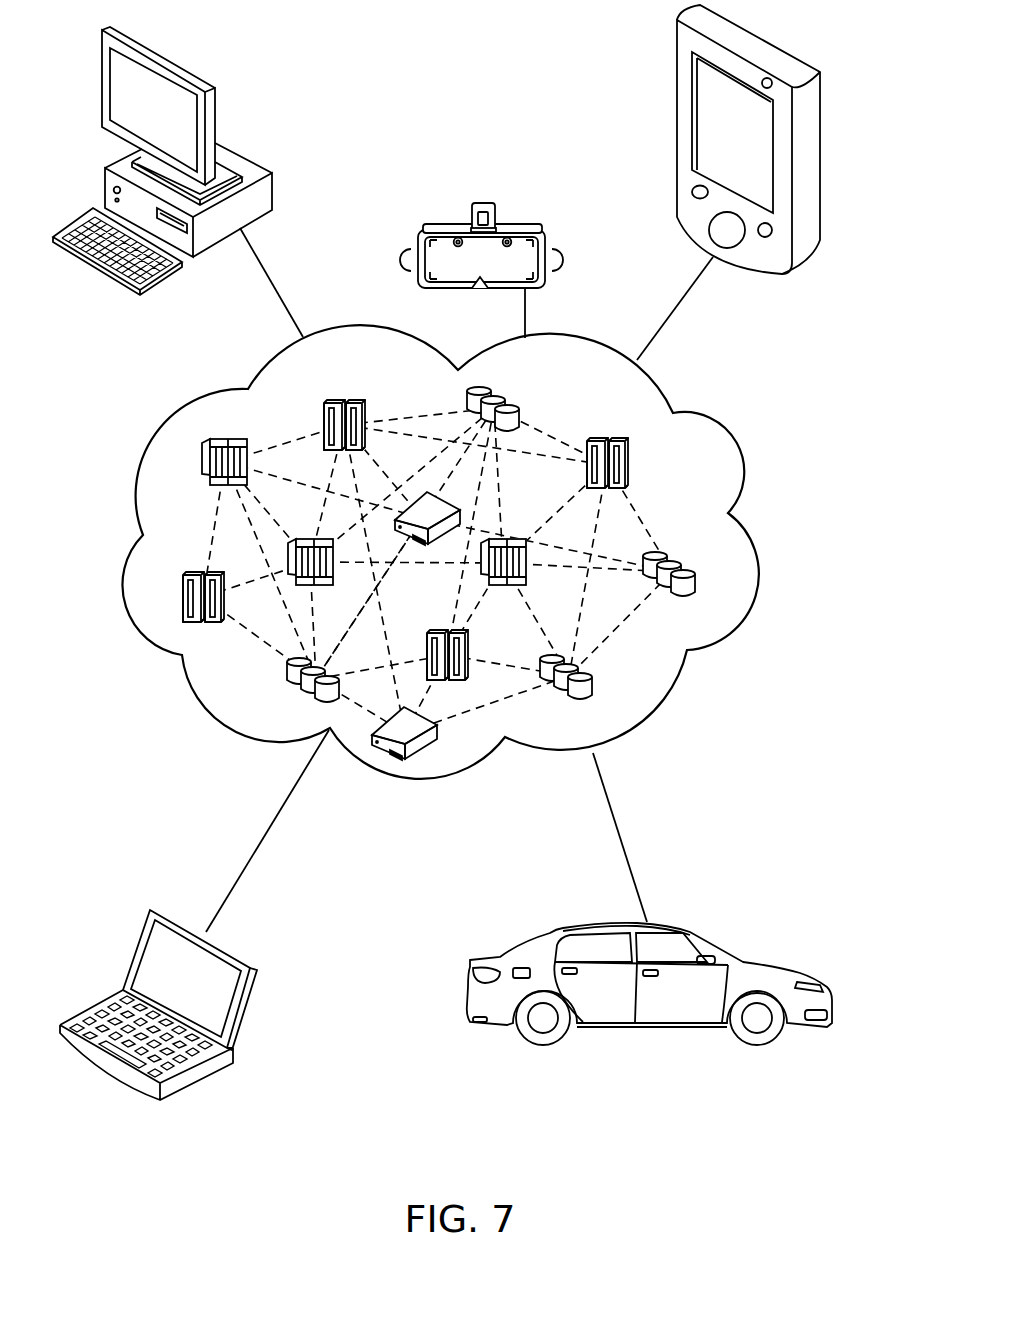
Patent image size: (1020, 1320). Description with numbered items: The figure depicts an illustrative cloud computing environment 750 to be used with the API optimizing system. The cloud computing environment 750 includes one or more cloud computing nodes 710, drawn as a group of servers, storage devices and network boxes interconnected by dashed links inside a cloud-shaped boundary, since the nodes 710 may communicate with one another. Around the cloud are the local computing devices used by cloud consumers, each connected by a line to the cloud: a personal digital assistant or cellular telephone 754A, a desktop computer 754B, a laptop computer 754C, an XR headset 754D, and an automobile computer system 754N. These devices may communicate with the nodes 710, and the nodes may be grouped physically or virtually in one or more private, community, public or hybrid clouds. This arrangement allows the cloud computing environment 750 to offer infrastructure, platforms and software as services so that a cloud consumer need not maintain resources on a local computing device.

The cloud computing nodes 710 is at (678, 488).
The cloud computing environment 750 is at (730, 632).
The personal digital assistant (PDA) or cellular telephone 754A is at (673, 85).
The desktop computer 754B is at (275, 187).
The laptop computer 754C is at (257, 977).
The XR headset 754D is at (495, 212).
The automobile computer system 754N is at (833, 987).